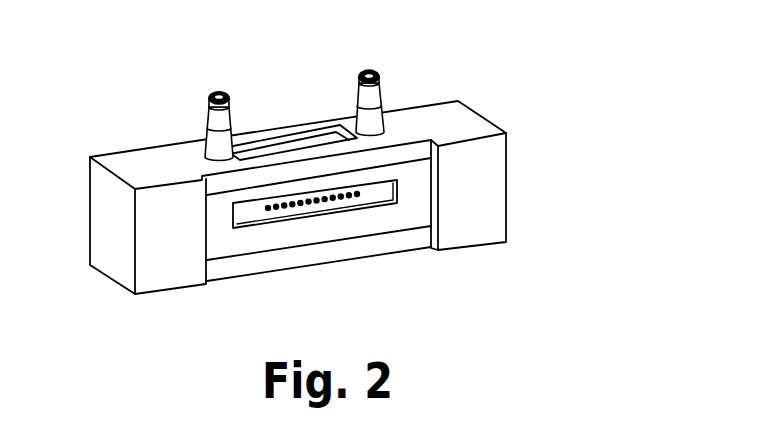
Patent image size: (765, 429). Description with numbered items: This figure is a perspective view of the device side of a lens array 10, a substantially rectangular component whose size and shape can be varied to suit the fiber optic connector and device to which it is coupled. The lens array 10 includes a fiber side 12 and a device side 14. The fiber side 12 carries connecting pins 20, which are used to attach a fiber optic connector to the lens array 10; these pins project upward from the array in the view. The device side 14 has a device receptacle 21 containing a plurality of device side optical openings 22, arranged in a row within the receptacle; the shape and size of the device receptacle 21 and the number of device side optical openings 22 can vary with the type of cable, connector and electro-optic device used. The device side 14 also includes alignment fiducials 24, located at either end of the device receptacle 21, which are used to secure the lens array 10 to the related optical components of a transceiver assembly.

The lens array 10 is at (315, 177).
The fiber side 12 is at (142, 156).
The device side 14 is at (469, 227).
The connecting pins 20 is at (229, 97).
The device receptacle 21 is at (289, 211).
The device side optical openings 22 is at (331, 207).
The alignment fiducials 24 is at (240, 213).